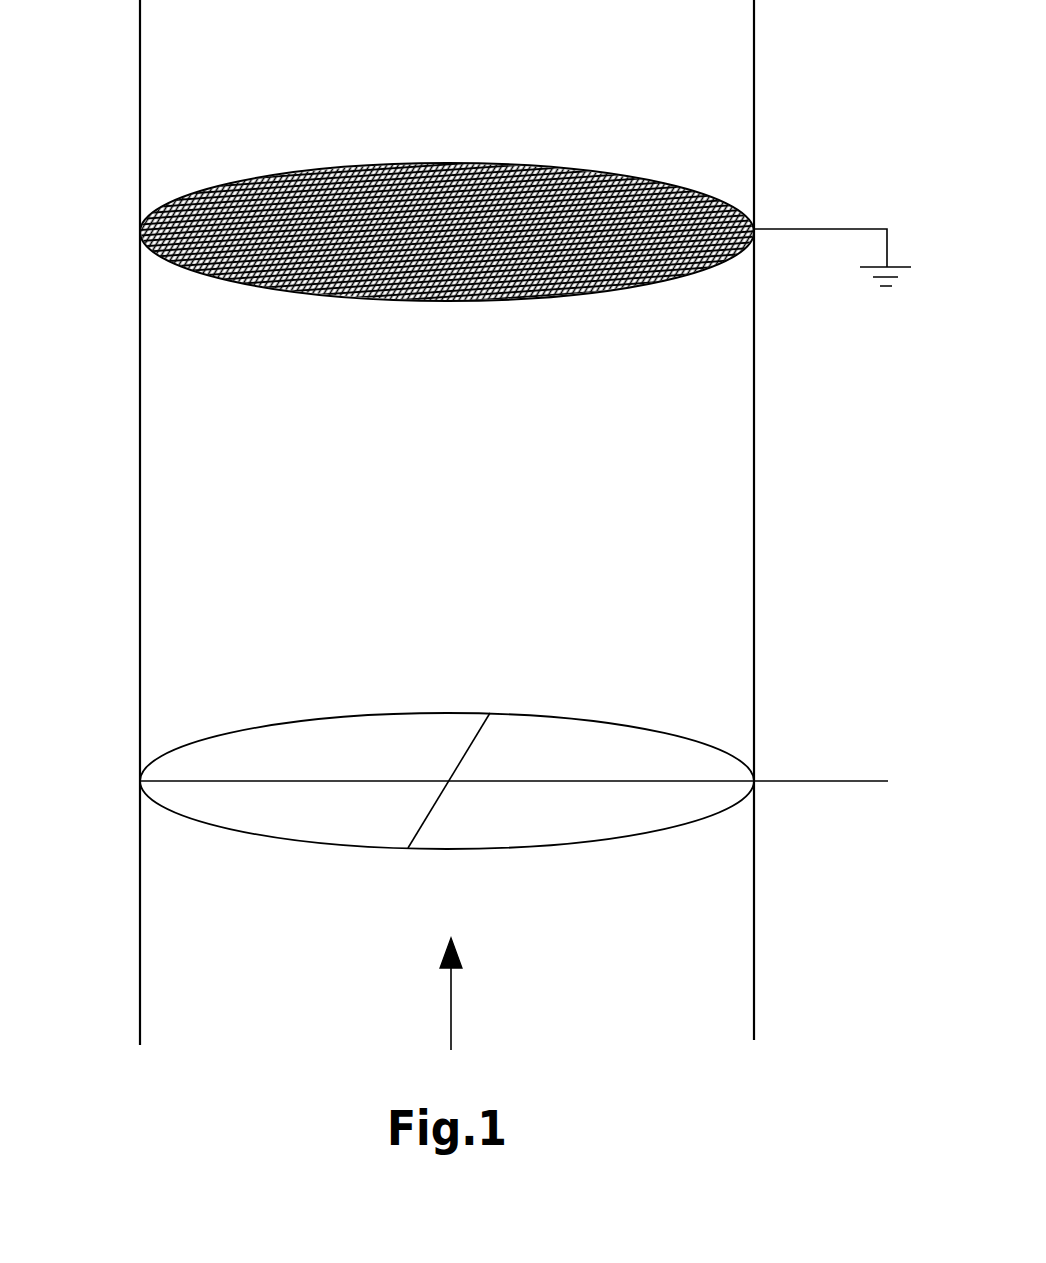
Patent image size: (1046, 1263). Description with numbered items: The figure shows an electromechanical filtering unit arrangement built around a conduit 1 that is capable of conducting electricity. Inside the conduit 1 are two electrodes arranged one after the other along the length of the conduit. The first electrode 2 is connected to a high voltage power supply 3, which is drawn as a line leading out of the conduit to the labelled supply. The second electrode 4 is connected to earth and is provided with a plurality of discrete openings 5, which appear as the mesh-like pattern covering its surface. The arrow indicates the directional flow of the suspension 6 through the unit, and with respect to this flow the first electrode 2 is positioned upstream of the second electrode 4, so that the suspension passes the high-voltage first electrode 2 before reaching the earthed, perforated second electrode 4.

The conduit 1 is at (140, 898).
The first electrode 2 is at (663, 828).
The high voltage power supply (EHT) 3 is at (927, 757).
The second electrode 4 is at (690, 185).
The discrete openings 5 is at (212, 195).
The directional flow of the suspension 6 is at (451, 1005).